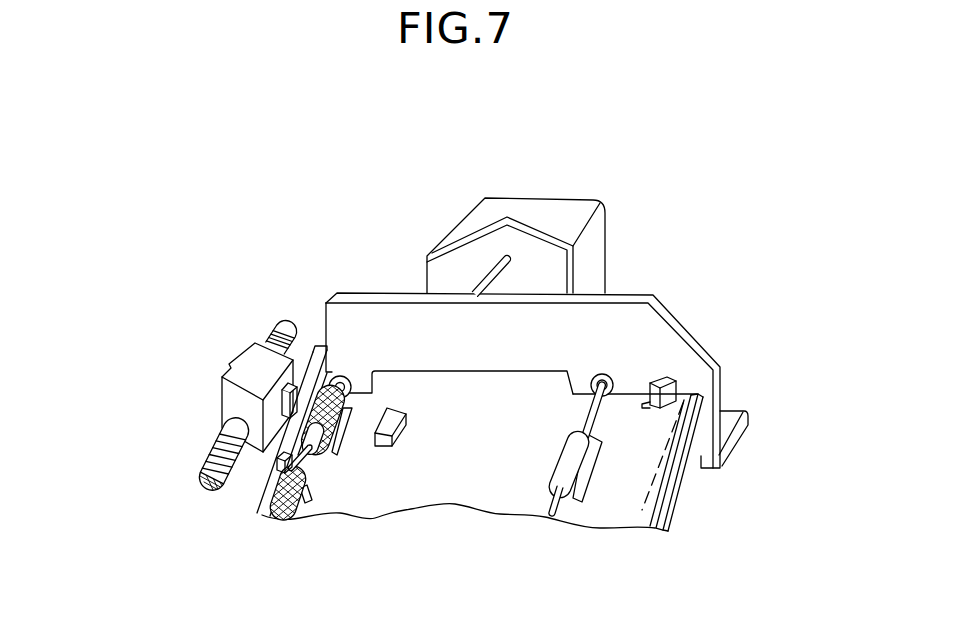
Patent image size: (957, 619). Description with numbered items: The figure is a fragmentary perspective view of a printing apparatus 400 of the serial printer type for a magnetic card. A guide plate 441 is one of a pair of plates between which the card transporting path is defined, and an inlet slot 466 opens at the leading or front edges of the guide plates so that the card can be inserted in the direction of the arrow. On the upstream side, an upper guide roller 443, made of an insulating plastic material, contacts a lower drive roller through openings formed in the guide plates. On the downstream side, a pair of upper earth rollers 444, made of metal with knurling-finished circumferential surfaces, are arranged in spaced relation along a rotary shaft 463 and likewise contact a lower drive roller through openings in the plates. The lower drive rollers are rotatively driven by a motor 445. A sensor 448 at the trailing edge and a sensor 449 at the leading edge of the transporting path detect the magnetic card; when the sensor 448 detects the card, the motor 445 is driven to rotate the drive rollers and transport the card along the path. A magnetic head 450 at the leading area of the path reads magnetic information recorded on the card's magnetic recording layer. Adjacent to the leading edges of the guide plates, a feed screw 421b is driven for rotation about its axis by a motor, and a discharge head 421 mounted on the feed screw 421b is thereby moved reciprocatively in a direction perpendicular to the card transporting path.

The printing apparatus 400 is at (188, 291).
The motor 445 is at (586, 203).
The guide plate 441 is at (405, 505).
The inlet slot 466 is at (661, 507).
The rotary shaft 463 is at (352, 395).
The upper guide roller 443 is at (566, 467).
The sensor 448 is at (656, 381).
The magnetic head 450 is at (407, 424).
The upper earth roller 444 is at (334, 432).
The sensor 449 is at (277, 467).
The discharge head 421 is at (228, 362).
The feed screw 421b is at (220, 463).